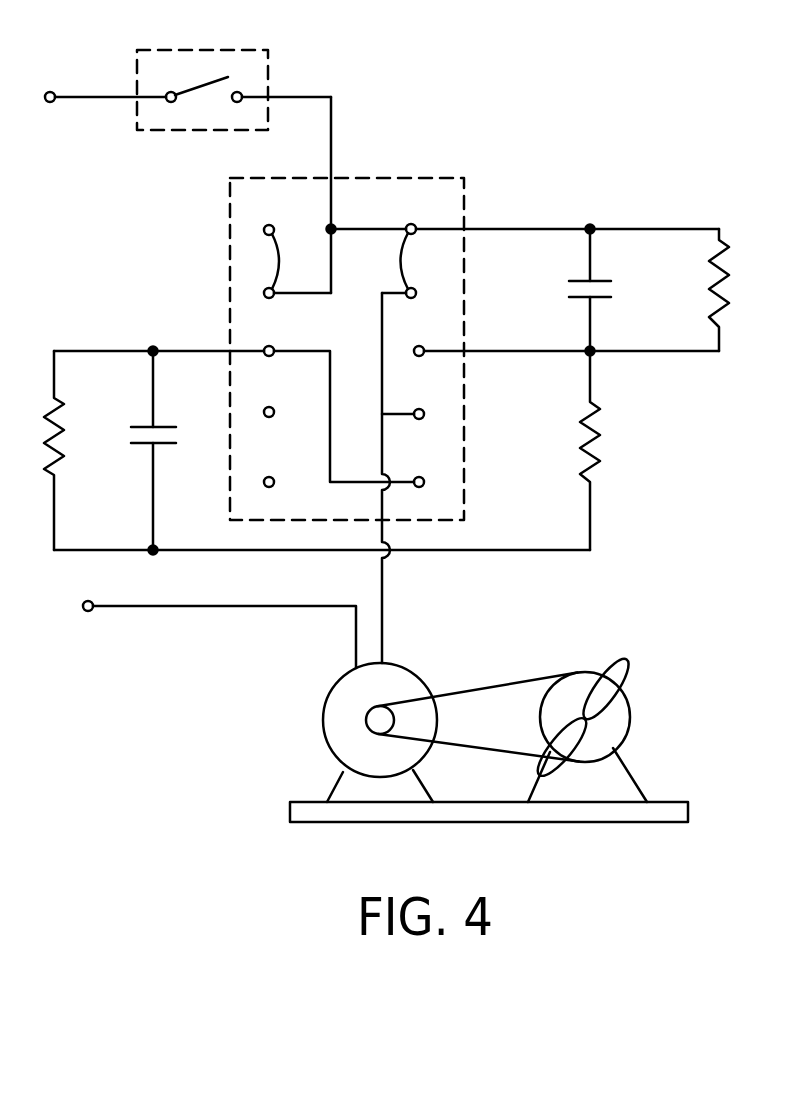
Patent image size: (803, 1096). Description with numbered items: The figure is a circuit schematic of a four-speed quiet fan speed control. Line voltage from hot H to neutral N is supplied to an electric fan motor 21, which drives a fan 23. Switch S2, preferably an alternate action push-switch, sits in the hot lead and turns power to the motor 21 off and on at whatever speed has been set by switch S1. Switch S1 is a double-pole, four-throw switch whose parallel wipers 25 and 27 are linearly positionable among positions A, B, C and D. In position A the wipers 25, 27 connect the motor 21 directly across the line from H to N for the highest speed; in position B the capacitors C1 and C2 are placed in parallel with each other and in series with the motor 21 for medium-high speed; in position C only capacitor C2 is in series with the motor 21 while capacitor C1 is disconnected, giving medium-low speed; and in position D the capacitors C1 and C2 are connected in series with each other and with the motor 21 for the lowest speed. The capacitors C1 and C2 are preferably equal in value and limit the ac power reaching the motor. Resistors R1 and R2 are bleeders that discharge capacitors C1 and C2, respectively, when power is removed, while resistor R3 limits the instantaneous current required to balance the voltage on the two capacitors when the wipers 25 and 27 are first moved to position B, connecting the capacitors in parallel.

The electric fan motor 21 is at (391, 663).
The fan 23 is at (626, 664).
The wiper 25 is at (260, 261).
The wiper 27 is at (420, 261).
The double-pole, 4-throw switch S1 is at (347, 332).
The switch S2 is at (202, 73).
The resistor R1 is at (36, 450).
The resistor R2 is at (740, 290).
The resistor R3 is at (610, 450).
The capacitor C1 is at (163, 450).
The capacitor C2 is at (611, 290).
The hot H is at (89, 99).
The neutral N is at (207, 630).